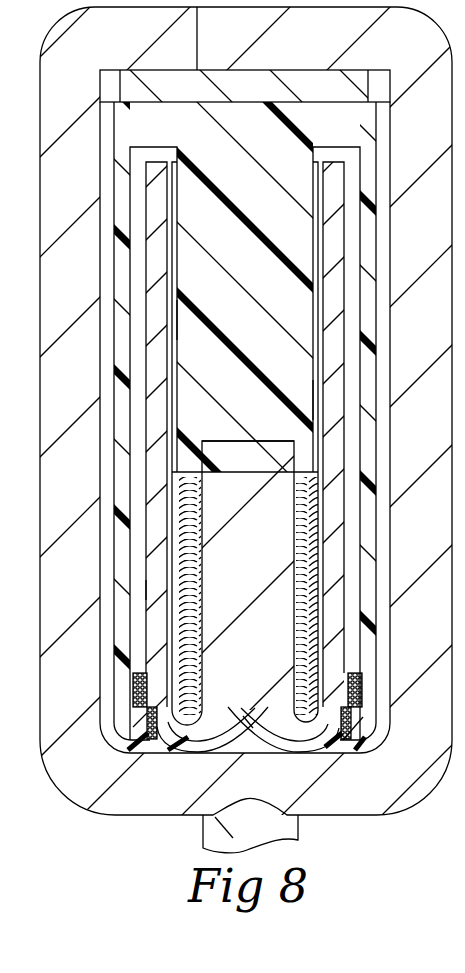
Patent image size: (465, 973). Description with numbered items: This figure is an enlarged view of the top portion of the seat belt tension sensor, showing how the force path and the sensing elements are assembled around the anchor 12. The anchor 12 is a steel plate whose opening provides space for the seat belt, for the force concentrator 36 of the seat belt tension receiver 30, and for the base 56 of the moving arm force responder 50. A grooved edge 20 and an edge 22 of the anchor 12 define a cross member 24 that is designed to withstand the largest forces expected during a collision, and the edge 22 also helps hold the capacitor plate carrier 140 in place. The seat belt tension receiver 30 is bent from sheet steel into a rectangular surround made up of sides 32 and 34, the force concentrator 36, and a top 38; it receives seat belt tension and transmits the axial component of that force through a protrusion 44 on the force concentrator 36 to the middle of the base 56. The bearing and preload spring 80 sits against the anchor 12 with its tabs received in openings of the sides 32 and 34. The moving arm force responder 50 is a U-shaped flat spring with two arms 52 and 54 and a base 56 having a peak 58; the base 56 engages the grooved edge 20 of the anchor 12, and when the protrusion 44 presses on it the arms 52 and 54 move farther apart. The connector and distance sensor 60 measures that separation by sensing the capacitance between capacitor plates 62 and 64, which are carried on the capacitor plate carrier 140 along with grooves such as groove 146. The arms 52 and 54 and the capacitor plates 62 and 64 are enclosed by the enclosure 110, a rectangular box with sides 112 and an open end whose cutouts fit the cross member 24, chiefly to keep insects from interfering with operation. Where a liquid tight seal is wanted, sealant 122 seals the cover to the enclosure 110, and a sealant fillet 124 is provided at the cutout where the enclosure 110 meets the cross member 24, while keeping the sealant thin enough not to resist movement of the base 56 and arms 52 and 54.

The anchor 12 is at (234, 829).
The grooved edge 20 is at (264, 705).
The edge 22 is at (280, 441).
The cross member 24 is at (254, 627).
The seat belt tension receiver 30 is at (421, 806).
The side 32 is at (56, 591).
The side 34 is at (407, 529).
The force concentrator 36 is at (232, 792).
The top 38 is at (221, 36).
The protrusion 44 is at (255, 740).
The moving arm force responder 50 is at (343, 740).
The arm 52 is at (150, 592).
The arm 54 is at (348, 562).
The base 56 is at (222, 755).
The peak 58 is at (248, 725).
The connector and distance sensor 60 is at (169, 132).
The capacitor plate 62 is at (180, 320).
The capacitor plate 64 is at (312, 398).
The bearing and preload spring 80 is at (242, 96).
The enclosure 110 is at (122, 317).
The sides 112 is at (153, 742).
The sealant 122 is at (135, 688).
The sealant fillet 124 is at (195, 627).
The capacitor plate carrier 140 is at (194, 237).
The groove 146 is at (233, 442).